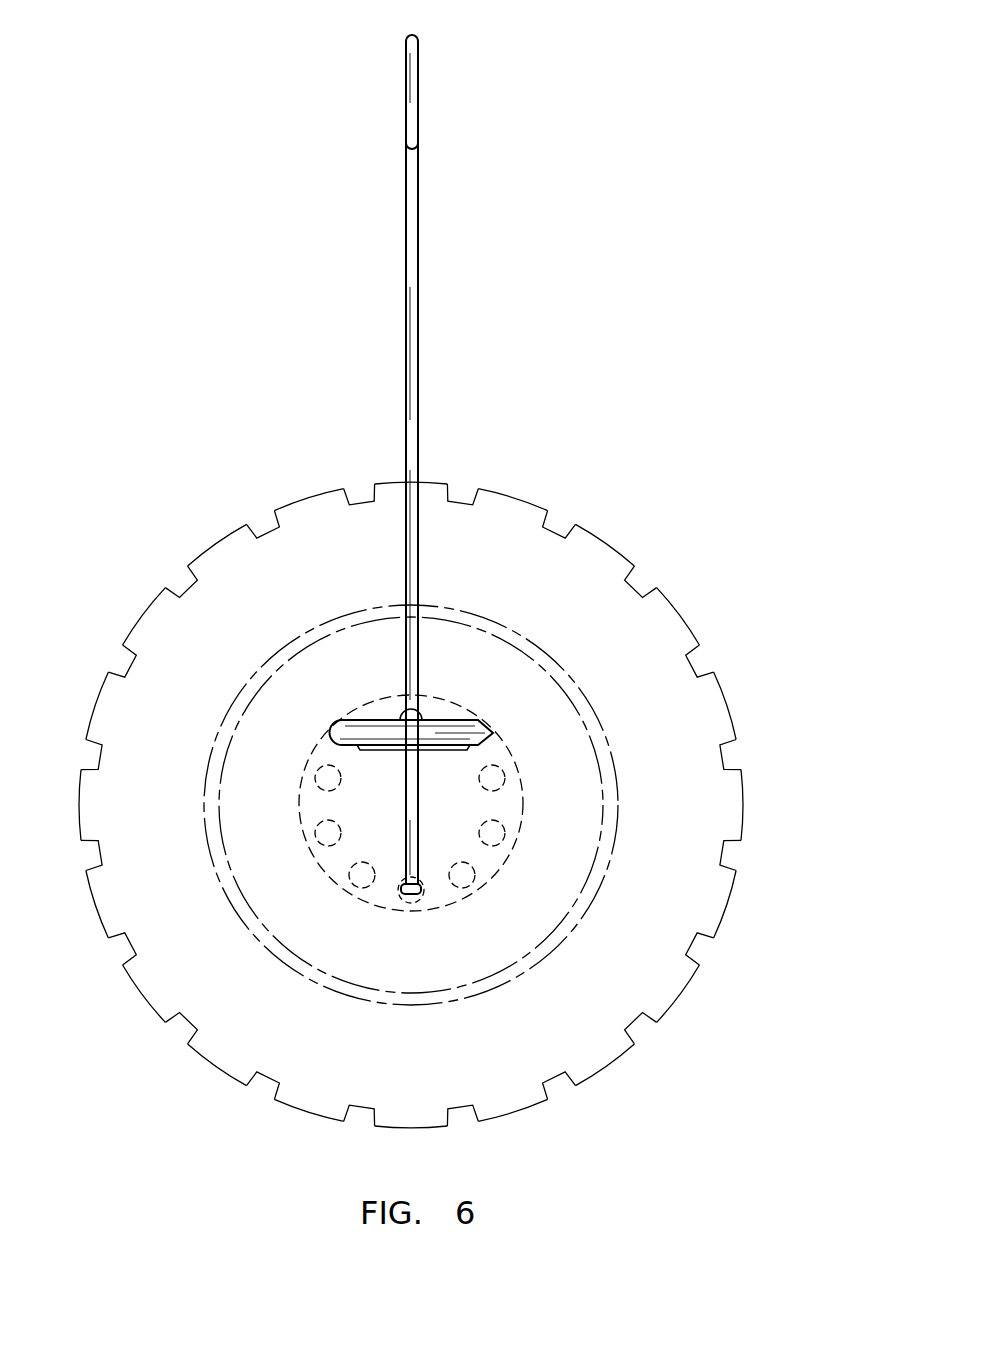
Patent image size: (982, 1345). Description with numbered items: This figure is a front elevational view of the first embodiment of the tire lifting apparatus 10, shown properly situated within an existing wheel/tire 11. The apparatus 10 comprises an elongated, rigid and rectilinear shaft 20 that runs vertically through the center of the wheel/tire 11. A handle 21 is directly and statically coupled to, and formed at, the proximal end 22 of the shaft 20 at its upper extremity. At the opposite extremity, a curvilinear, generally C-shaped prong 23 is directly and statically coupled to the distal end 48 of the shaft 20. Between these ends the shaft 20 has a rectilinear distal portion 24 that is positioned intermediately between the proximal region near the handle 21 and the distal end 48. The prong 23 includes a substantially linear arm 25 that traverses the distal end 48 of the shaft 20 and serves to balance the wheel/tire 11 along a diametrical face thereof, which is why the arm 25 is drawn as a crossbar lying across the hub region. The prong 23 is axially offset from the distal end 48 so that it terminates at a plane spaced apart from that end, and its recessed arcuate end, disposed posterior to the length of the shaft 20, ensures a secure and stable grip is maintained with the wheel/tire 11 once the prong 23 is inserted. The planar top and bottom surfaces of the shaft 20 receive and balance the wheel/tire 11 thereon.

The tire lifting apparatus 10 is at (100, 186).
The tire/wheel 11 is at (303, 528).
The shaft 20 is at (413, 260).
The handle 21 is at (412, 114).
The proximal end 22 is at (412, 207).
The prong 23 is at (410, 895).
The distal portion 24 is at (413, 788).
The arm 25 is at (495, 728).
The distal end 48 is at (413, 863).